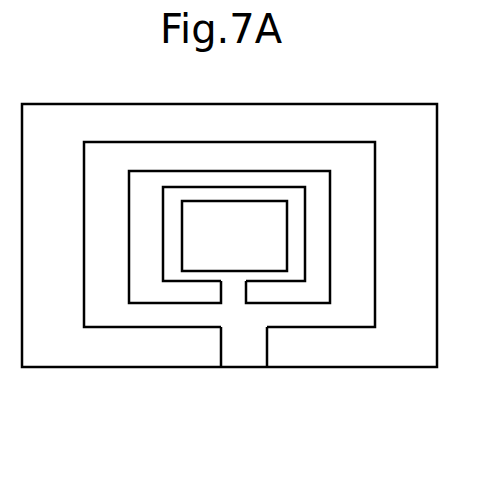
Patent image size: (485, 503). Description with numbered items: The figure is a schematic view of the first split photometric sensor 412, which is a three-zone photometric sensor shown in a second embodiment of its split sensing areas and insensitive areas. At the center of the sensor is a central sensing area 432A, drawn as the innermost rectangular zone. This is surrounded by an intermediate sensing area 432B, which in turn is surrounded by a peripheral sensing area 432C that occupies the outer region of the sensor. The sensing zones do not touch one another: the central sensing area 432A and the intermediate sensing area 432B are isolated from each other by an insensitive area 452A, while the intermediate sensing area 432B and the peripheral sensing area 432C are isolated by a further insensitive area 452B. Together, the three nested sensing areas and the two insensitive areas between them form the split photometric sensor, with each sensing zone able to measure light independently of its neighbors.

The first split photometric sensor 412 is at (152, 102).
The central sensing area 432A is at (236, 260).
The intermediate sensing area 432B is at (318, 268).
The peripheral sensing area 432C is at (407, 260).
The insensitive area 452A is at (297, 270).
The insensitive area 452B is at (353, 260).